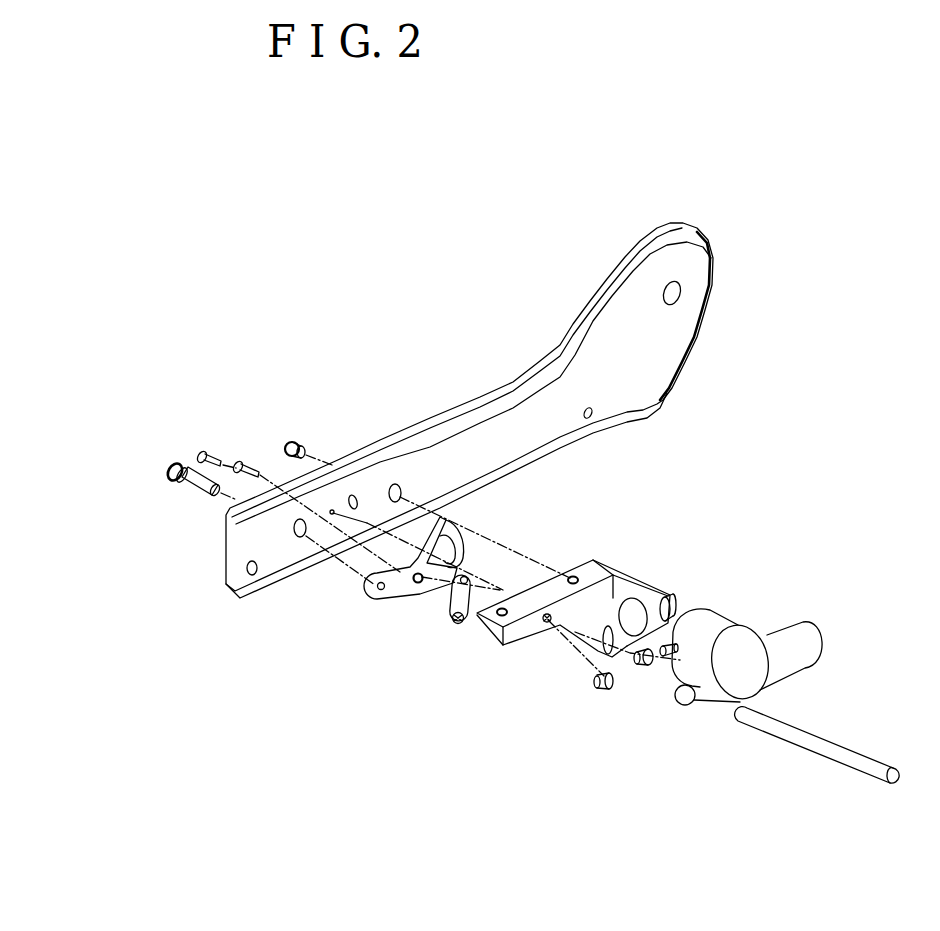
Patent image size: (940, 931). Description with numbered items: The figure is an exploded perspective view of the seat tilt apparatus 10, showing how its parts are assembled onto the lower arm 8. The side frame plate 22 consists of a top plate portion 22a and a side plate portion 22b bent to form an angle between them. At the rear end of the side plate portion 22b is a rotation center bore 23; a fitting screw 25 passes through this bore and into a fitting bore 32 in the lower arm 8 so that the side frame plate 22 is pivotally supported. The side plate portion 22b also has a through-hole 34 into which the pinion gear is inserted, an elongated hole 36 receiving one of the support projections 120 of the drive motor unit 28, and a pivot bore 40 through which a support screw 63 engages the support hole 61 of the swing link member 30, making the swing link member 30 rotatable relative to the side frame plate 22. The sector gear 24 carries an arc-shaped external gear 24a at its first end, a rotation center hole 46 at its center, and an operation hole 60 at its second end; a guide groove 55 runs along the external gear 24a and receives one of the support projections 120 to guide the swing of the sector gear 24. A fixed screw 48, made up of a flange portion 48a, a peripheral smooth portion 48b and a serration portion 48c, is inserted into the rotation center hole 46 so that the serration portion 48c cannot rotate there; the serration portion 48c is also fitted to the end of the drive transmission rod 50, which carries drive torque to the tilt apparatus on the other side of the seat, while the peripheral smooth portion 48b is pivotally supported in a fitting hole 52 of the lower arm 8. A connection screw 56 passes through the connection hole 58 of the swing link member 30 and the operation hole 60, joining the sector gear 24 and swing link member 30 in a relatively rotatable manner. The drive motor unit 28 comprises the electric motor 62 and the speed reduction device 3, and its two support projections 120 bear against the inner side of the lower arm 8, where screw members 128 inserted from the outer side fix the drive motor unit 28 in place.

The lower arm 8 is at (650, 383).
The seat tilt apparatus 10 is at (640, 521).
The side frame plate 22 is at (597, 587).
The top plate portion 22a is at (577, 575).
The side plate portion 22b is at (631, 583).
The rotation center bore 23 is at (670, 610).
The sector gear 24 is at (432, 568).
The external gear 24a is at (468, 543).
The fitting screw 25 is at (300, 447).
The drive motor unit 28 is at (747, 613).
The speed reduction device 3 is at (737, 624).
The swing link member 30 is at (449, 631).
The fitting bore 32 is at (398, 484).
The through-hole 34 is at (638, 598).
The elongated hole 36 is at (603, 634).
The pivot bore 40 is at (528, 642).
The rotation center hole 46 is at (417, 583).
The fixed screw 48 is at (164, 516).
The flange portion 48a is at (169, 480).
The peripheral smooth portion 48b is at (178, 484).
The serration portion 48c is at (198, 512).
The drive transmission rod 50 is at (853, 763).
The fitting hole 52 is at (300, 538).
The guide groove 55 is at (444, 541).
The connection screw 56 is at (600, 692).
The connection hole 58 is at (460, 626).
The operation hole 60 is at (372, 592).
The support hole 61 is at (580, 587).
The electric motor 62 is at (787, 626).
The support screw 63 is at (651, 667).
The support projections 120 is at (661, 660).
The screw members 128 is at (248, 461).